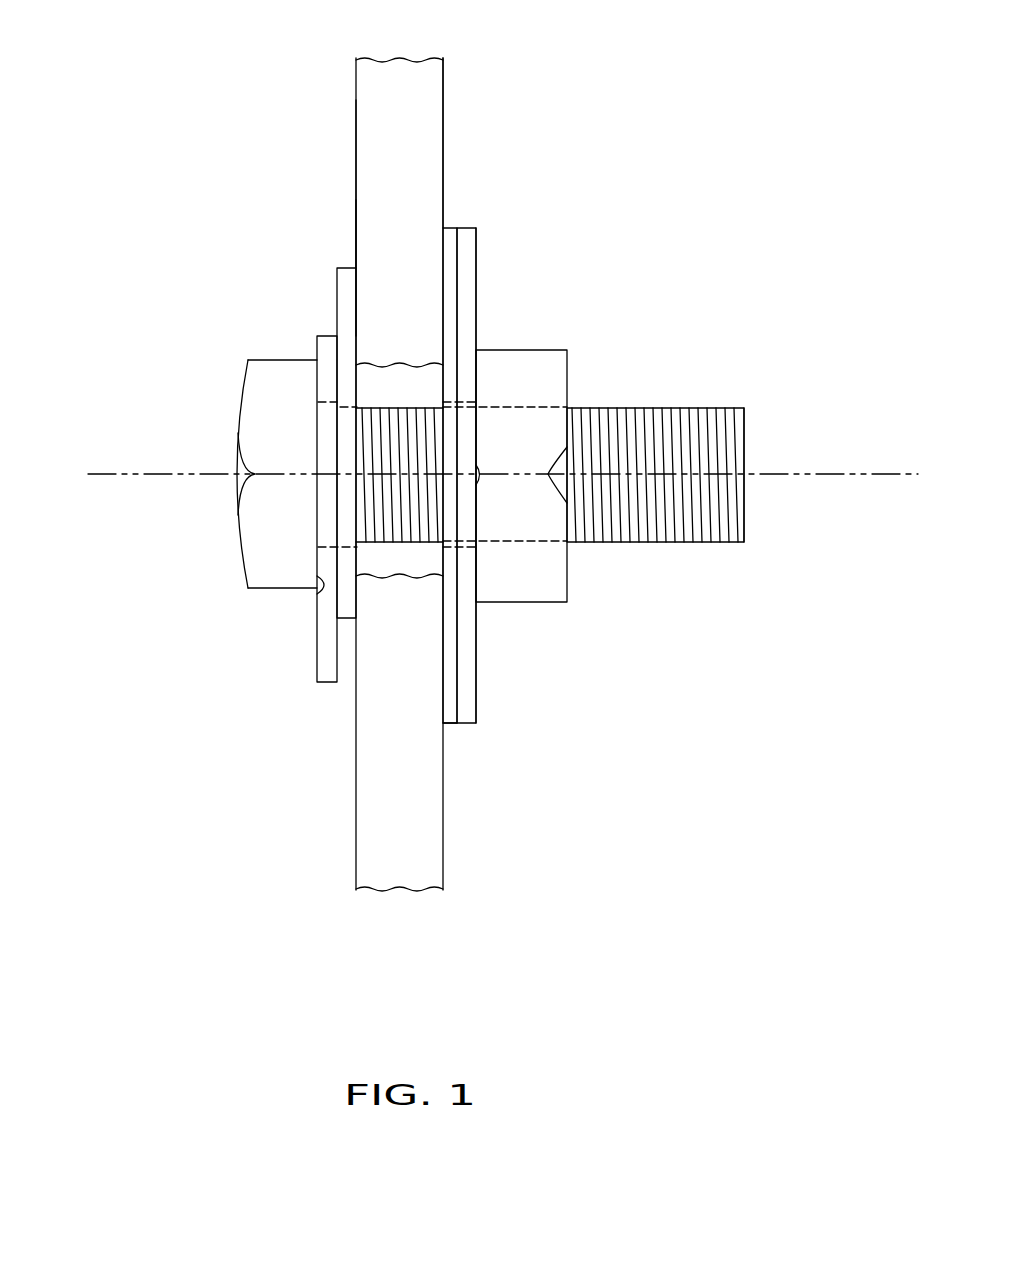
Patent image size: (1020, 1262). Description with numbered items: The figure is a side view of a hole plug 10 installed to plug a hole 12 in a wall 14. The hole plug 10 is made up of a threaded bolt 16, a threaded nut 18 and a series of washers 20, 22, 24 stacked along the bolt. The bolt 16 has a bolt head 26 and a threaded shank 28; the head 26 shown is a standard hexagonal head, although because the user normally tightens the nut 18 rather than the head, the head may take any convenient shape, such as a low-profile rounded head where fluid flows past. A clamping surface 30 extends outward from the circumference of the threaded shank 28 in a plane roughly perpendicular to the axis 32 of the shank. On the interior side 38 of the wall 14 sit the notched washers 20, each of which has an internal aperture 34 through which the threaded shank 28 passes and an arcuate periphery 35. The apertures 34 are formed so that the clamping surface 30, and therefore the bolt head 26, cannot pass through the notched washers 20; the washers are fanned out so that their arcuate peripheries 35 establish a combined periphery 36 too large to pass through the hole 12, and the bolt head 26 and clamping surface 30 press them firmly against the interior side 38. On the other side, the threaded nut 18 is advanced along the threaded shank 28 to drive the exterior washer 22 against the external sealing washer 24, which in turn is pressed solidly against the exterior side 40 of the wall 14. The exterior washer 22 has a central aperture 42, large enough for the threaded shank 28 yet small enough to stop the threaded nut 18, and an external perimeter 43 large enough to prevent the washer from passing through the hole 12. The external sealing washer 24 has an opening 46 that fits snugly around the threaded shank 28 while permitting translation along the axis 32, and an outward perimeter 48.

The hole plug 10 is at (176, 328).
The hole 12 is at (365, 367).
The wall 14 is at (355, 82).
The threaded bolt 16 is at (732, 545).
The threaded nut 18 is at (568, 582).
The notched washer 20 is at (337, 336).
The exterior washer 22 is at (477, 334).
The external sealing washer 24 is at (448, 227).
The bolt head 26 is at (240, 557).
The threaded shank 28 is at (745, 513).
The clamping surface 30 is at (316, 594).
The axis 32 is at (105, 476).
The internal aperture 34 is at (333, 401).
The arcuate periphery 35 is at (347, 267).
The combined periphery 36 is at (355, 255).
The interior side 38 is at (355, 183).
The exterior side 40 is at (443, 93).
The central aperture 42 is at (463, 547).
The external perimeter 43 is at (473, 725).
The opening 46 is at (460, 394).
The outward perimeter 48 is at (450, 725).